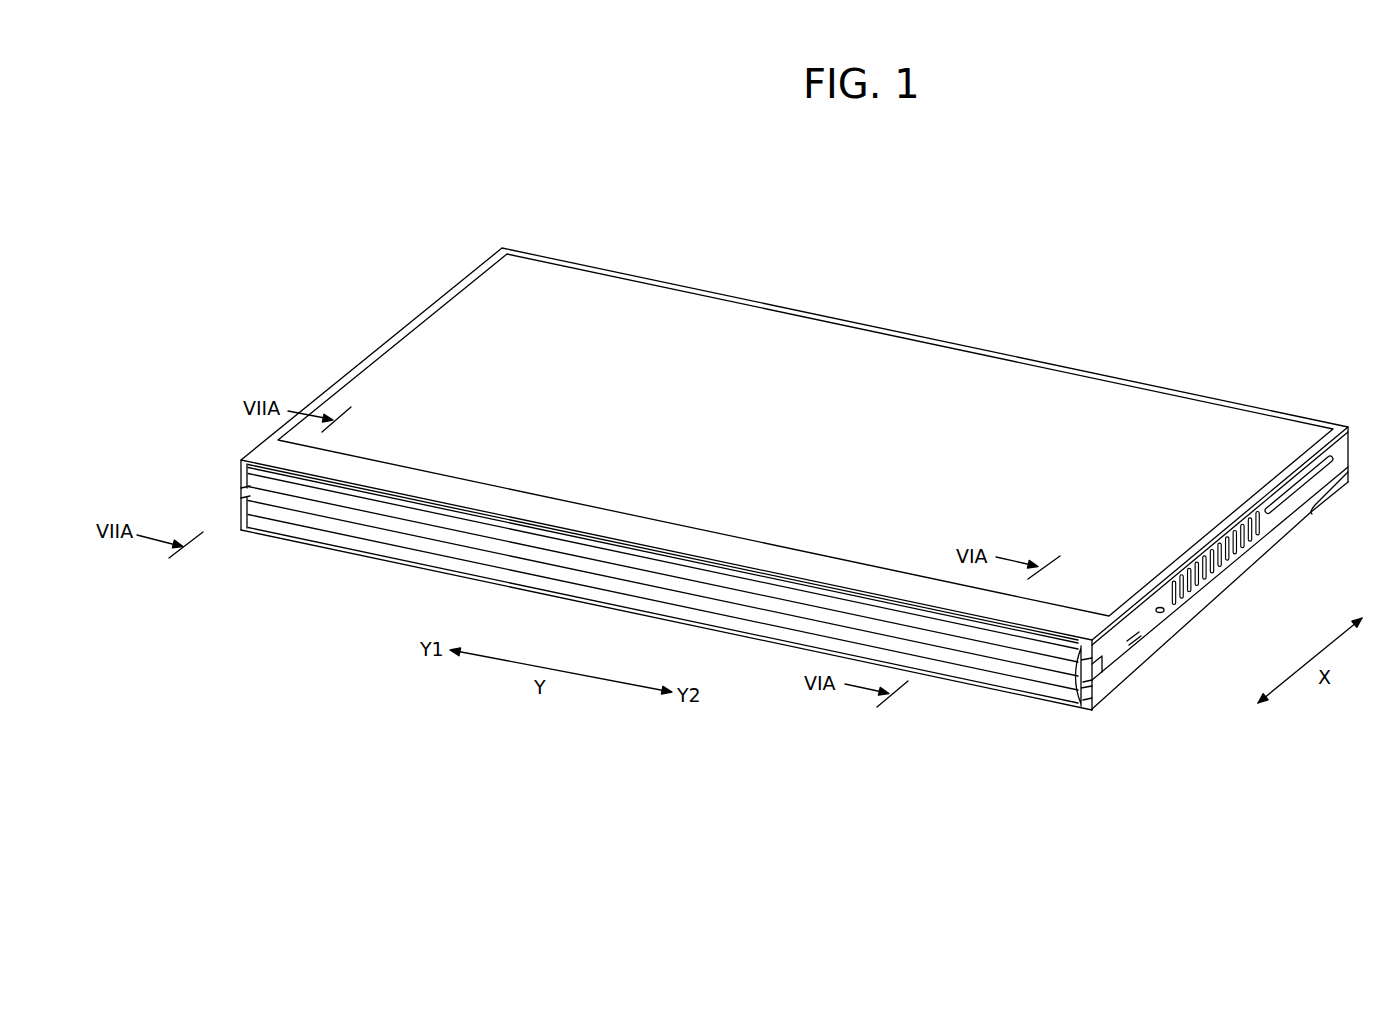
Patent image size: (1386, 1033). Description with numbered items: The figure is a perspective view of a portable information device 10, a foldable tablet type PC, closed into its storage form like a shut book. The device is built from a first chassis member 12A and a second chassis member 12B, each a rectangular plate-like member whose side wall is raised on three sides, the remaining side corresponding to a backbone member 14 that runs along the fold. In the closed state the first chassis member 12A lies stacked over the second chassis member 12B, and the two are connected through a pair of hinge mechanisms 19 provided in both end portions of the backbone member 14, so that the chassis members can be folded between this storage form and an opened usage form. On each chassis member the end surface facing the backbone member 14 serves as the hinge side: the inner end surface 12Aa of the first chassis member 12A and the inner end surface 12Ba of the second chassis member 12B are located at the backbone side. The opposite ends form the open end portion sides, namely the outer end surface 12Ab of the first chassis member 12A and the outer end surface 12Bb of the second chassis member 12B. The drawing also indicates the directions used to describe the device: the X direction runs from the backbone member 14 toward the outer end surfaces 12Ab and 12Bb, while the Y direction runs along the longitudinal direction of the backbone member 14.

The portable information device 10 is at (327, 276).
The first chassis member 12A is at (915, 368).
The outer end surface 12Ab is at (1351, 437).
The inner end surface 12Aa is at (1100, 662).
The second chassis member 12B is at (1217, 606).
The inner end surface 12Ba is at (1083, 700).
The outer end surface 12Bb is at (1351, 472).
The backbone member 14 is at (583, 573).
The hinge mechanism 19 is at (240, 488).